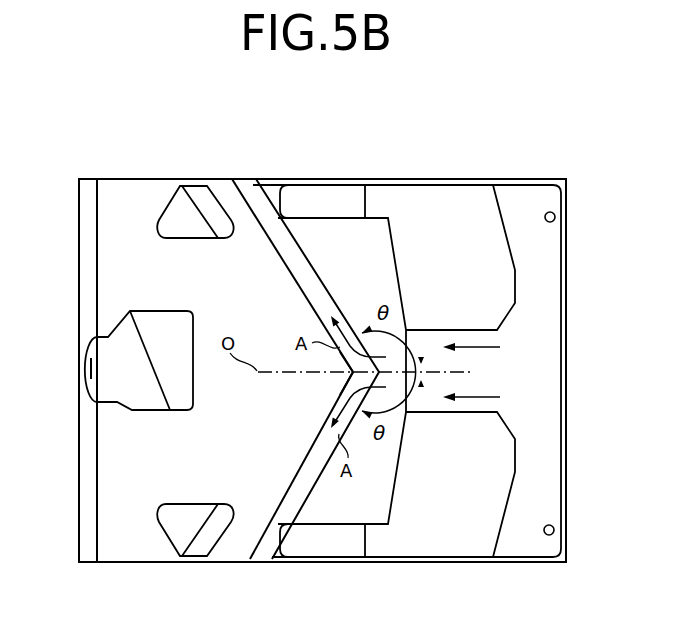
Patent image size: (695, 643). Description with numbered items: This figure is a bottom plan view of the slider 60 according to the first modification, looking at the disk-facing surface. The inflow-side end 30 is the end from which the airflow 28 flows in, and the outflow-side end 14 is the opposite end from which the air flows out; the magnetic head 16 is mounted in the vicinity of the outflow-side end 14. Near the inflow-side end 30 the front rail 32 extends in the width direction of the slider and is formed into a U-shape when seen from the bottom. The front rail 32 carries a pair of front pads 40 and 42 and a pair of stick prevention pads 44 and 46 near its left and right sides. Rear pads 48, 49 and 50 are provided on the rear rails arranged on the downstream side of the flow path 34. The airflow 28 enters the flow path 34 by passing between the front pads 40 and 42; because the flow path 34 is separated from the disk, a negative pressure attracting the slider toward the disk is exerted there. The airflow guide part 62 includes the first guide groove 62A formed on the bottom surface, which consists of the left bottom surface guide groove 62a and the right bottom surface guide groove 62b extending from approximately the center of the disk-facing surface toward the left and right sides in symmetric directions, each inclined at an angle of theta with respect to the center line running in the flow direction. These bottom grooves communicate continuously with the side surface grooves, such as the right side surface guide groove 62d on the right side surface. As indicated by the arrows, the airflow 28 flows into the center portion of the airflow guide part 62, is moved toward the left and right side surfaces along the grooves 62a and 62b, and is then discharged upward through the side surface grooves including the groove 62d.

The outflow-side end 14 is at (78, 490).
The magnetic head 16 is at (89, 368).
The airflow 28 is at (483, 347).
The inflow-side end 30 is at (567, 403).
The front rail 32 is at (553, 293).
The flow path 34 is at (323, 243).
The front pad 40 is at (466, 547).
The front pad 42 is at (464, 200).
The stick prevention pad 44 is at (555, 530).
The stick prevention pad 46 is at (556, 217).
The rear pad 48 is at (163, 540).
The rear pad 49 is at (128, 315).
The rear pad 50 is at (166, 205).
The slider 60 is at (402, 161).
The airflow guide part 62 is at (340, 286).
The left bottom surface guide groove 62a is at (306, 455).
The right bottom surface guide groove 62b is at (296, 279).
The right side surface guide groove 62d is at (245, 179).
The first guide groove 62A is at (292, 425).